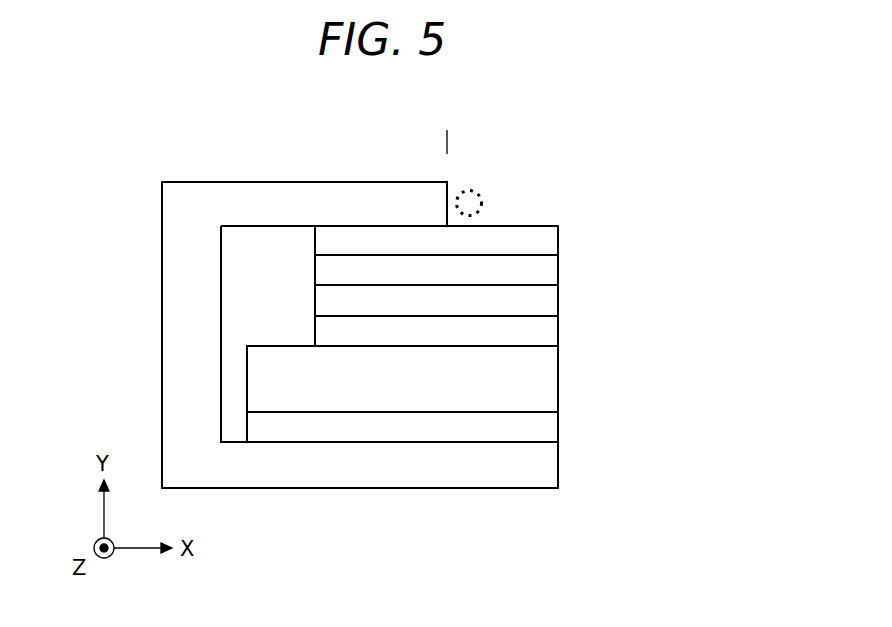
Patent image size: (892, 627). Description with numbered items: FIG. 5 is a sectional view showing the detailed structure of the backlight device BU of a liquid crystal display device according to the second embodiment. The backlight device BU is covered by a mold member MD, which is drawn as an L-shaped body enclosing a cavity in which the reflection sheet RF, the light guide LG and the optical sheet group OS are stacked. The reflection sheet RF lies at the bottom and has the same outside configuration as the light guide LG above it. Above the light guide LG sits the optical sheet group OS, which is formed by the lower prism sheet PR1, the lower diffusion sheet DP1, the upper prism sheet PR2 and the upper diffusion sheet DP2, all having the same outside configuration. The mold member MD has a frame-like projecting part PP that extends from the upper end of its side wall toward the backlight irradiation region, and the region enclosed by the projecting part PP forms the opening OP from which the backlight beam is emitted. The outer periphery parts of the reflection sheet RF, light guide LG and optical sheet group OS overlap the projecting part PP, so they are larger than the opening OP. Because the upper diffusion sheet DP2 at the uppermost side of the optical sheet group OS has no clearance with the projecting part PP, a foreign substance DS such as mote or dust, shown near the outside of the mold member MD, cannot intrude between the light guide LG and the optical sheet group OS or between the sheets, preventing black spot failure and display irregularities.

The mold member MD is at (540, 464).
The reflection sheet RF is at (537, 425).
The light guide LG is at (543, 378).
The lower prism sheet PR1 is at (540, 330).
The lower diffusion sheet DP1 is at (538, 302).
The upper prism sheet PR2 is at (542, 268).
The upper diffusion sheet DP2 is at (542, 238).
The optical sheet group OS is at (698, 224).
The backlight device BU is at (754, 224).
The projecting part PP is at (443, 170).
The opening OP is at (556, 142).
The foreign substance DS is at (475, 201).